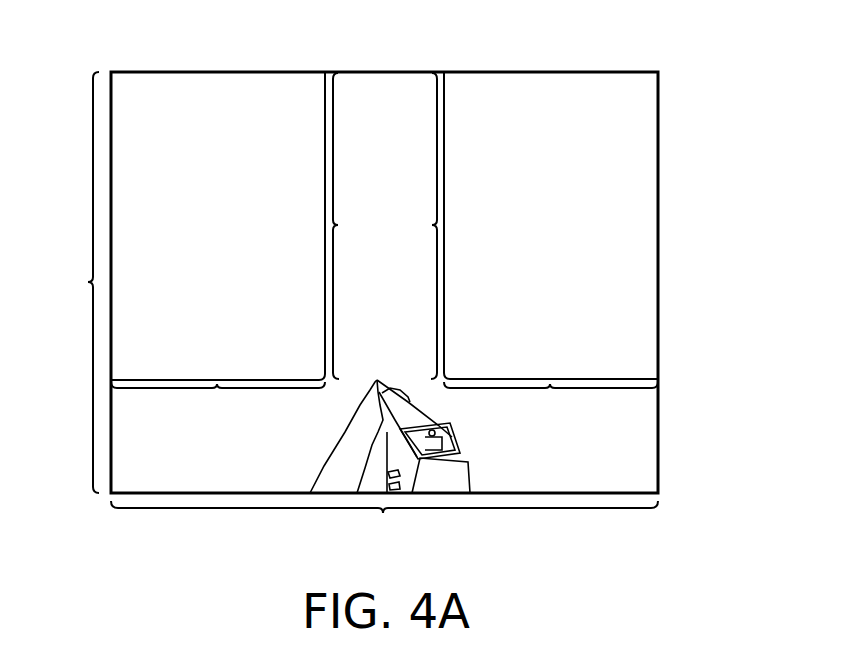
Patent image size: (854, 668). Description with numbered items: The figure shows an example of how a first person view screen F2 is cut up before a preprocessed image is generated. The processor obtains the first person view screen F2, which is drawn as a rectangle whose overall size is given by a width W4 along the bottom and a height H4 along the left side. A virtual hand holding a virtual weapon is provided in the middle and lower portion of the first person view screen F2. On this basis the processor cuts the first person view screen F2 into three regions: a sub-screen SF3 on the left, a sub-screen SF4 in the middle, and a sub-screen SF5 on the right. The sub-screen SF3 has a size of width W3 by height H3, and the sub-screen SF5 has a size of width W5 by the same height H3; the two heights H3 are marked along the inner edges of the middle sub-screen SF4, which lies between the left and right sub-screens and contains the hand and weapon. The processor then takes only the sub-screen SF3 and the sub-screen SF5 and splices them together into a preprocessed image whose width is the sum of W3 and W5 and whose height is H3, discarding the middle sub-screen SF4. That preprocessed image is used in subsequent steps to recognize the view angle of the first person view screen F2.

The first person view screen F2 is at (605, 72).
The sub-screen SF3 is at (223, 95).
The sub-screen SF4 is at (390, 93).
The sub-screen SF5 is at (643, 323).
The height of the sub-screens H3 is at (385, 226).
The height of the first person view screen H4 is at (79, 282).
The width of sub-screen SF3 W3 is at (218, 407).
The width of the first person view screen W4 is at (384, 526).
The width of sub-screen SF5 W5 is at (551, 407).